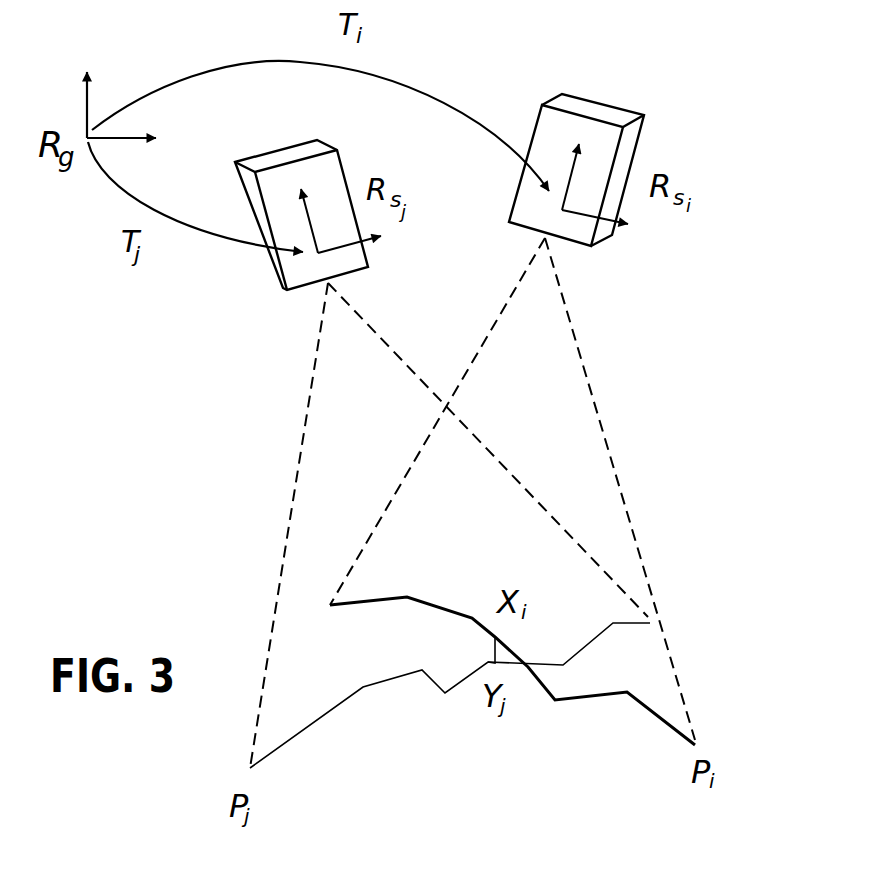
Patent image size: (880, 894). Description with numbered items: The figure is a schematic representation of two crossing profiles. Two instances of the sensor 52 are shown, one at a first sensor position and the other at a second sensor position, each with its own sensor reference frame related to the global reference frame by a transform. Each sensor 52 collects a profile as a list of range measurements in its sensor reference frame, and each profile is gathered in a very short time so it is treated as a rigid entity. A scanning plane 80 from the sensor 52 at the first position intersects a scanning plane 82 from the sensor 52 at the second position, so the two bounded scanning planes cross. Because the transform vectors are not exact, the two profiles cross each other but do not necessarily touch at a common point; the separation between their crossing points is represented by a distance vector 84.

The sensor 52 is at (268, 273).
The scanning plane 80 is at (337, 475).
The scanning plane 82 is at (587, 448).
The distance vector 84 is at (490, 645).